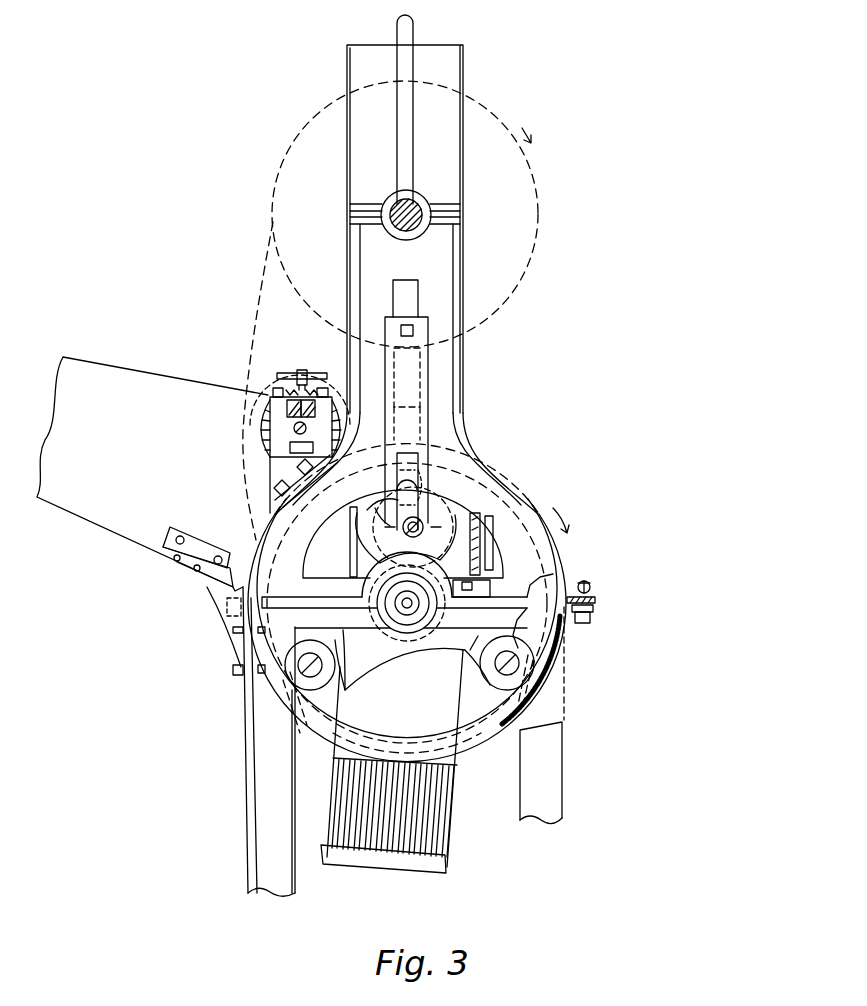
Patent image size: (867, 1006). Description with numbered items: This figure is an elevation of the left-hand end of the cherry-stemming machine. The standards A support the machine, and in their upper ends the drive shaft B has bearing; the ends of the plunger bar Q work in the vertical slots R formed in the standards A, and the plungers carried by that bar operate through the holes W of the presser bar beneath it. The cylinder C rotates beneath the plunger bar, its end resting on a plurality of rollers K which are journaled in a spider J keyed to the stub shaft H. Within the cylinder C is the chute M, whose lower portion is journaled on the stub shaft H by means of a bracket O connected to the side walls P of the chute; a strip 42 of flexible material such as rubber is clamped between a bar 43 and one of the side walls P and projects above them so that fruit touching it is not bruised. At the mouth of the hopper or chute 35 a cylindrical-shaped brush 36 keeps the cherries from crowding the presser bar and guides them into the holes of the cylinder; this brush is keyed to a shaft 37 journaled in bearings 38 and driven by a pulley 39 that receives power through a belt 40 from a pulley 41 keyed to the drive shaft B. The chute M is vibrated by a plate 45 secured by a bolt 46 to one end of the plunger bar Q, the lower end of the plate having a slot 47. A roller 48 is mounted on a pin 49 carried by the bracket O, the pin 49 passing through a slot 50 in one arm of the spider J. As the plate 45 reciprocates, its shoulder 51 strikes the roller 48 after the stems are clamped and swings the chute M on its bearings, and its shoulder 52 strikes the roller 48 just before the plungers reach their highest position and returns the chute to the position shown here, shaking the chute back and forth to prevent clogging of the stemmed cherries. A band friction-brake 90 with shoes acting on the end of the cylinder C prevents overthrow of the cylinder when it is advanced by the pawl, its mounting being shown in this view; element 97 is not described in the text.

The hopper or chute 35 is at (152, 474).
The cylindrical-shaped brush 36 is at (262, 437).
The shaft 37 is at (293, 428).
The bearings 38 is at (283, 433).
The pulley 39 is at (263, 380).
The belt 40 is at (258, 303).
The pulley 41 is at (540, 178).
The strip of flexible material 42 is at (490, 527).
The bar 43 is at (518, 510).
The plate 45 is at (420, 432).
The bolt 46 is at (415, 330).
The slot 47 is at (406, 460).
The roller 48 is at (372, 535).
The pin 49 is at (430, 522).
The slot 50 is at (372, 521).
The shoulder 51 is at (430, 462).
The shoulder 52 is at (380, 507).
The band friction-brake 90 is at (486, 757).
The scale strip 97 is at (555, 690).
The standards A is at (251, 741).
The drive shaft B is at (413, 204).
The cylinder C is at (557, 583).
The stub shaft H is at (430, 613).
The spider J is at (440, 655).
The rollers K is at (425, 516).
The chute M is at (417, 858).
The bracket O is at (466, 570).
The side walls P is at (516, 556).
The plunger bar Q is at (401, 290).
The vertical slots R is at (405, 377).
The holes W is at (393, 613).